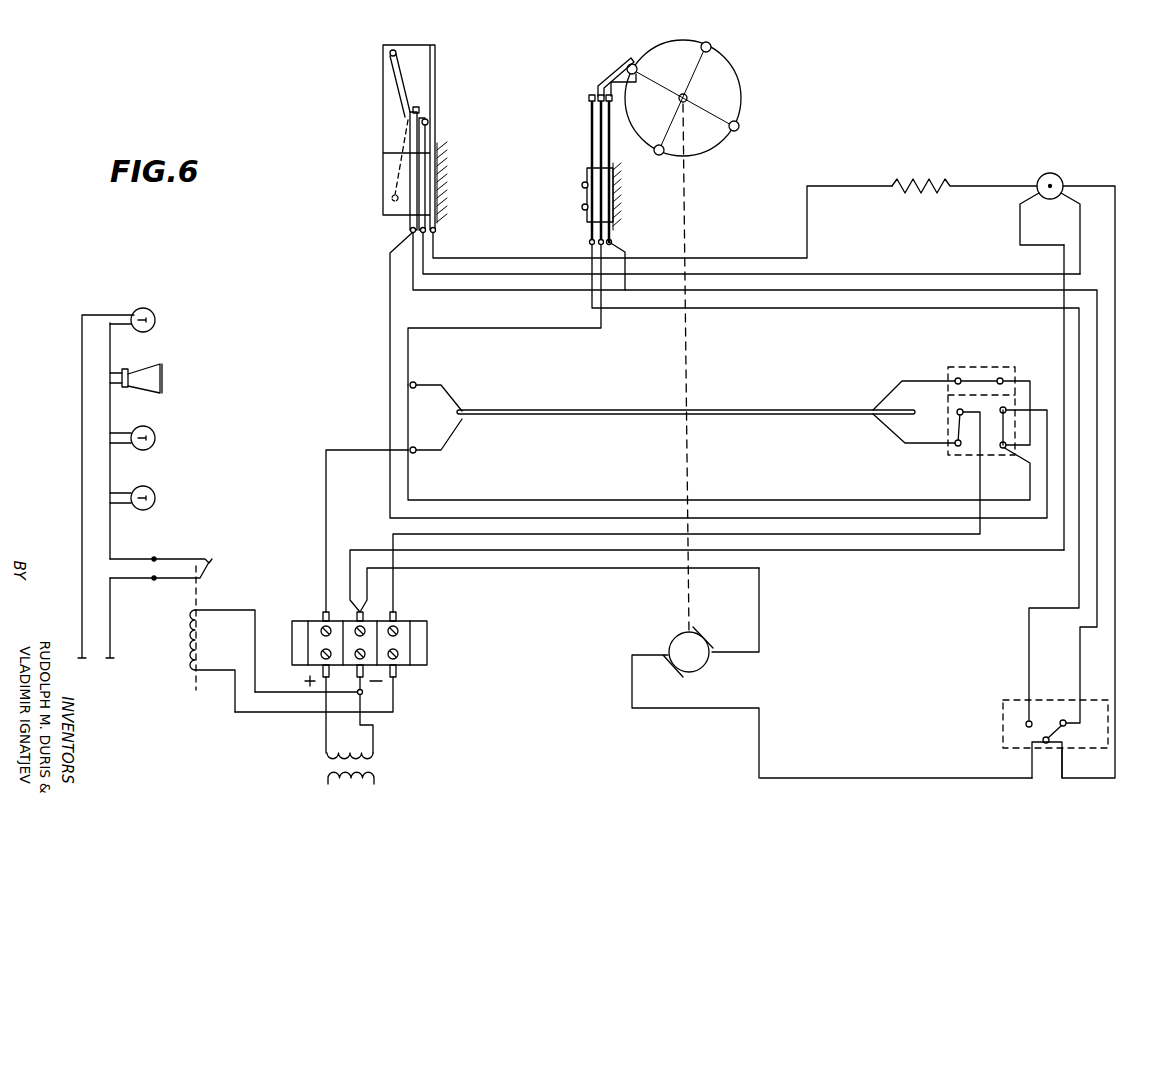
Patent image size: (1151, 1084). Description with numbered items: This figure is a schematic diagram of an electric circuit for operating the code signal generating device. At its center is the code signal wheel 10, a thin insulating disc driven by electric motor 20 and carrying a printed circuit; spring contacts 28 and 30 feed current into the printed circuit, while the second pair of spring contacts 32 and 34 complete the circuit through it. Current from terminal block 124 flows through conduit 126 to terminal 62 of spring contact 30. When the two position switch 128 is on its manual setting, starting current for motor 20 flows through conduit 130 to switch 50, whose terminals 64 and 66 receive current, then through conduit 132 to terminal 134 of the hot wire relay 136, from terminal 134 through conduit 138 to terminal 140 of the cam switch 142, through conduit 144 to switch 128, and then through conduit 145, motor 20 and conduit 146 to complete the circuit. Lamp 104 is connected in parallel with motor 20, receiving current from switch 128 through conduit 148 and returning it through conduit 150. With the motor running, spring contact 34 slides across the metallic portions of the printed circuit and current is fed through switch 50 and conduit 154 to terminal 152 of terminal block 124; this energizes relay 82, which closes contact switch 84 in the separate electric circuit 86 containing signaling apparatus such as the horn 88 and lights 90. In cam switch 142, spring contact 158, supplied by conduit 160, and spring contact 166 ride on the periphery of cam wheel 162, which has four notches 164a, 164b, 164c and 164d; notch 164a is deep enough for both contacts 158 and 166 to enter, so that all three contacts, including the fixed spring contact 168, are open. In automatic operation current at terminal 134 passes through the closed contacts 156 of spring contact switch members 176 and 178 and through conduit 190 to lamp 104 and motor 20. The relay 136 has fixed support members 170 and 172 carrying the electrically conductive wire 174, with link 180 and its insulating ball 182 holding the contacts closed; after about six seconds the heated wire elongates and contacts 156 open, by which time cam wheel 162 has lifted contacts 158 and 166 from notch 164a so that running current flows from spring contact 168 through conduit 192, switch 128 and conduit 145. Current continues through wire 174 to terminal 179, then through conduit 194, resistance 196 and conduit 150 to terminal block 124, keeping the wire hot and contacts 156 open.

The code signal wheel 10 is at (713, 408).
The electric motor 20 is at (704, 664).
The spring contact 28 is at (440, 383).
The spring contact 30 is at (438, 447).
The spring contact 32 is at (920, 371).
The spring contact 34 is at (880, 446).
The switch 50 is at (957, 378).
The terminal 62 is at (423, 453).
The terminal 64 is at (1003, 463).
The terminal 66 is at (1000, 378).
The relay 82 is at (190, 641).
The contact switch 84 is at (210, 566).
The electric circuit 86 is at (82, 493).
The horn 88 is at (164, 378).
The lights 90 is at (156, 320).
The lamp 104 is at (1062, 166).
The terminal block 124 is at (296, 620).
The conduit 126 is at (326, 488).
The two position switch 128 is at (1002, 710).
The conduit 130 is at (503, 500).
The conduit 132 is at (586, 517).
The terminal 134 is at (410, 232).
The hot wire relay 136 is at (369, 118).
The conduit 138 is at (526, 302).
The terminal 140 is at (614, 244).
The cam switch 142 is at (572, 188).
The conduit 144 is at (900, 289).
The conduit 145 is at (878, 777).
The conduit 146 is at (563, 572).
The conduit 148 is at (1094, 186).
The conduit 150 is at (1058, 328).
The terminal 152 is at (398, 612).
The conduit 154 is at (632, 533).
The contacts 156 is at (420, 110).
The spring contact 158 is at (598, 90).
The conduit 160 is at (456, 327).
The cam wheel 162 is at (741, 92).
The notch 164a is at (632, 63).
The notch 164b is at (659, 156).
The notch 164c is at (739, 127).
The notch 164d is at (711, 49).
The spring contact 166 is at (616, 100).
The spring contact 168 is at (590, 130).
The fixed support member 170 is at (391, 199).
The fixed support member 172 is at (390, 52).
The electrically conductive wire 174 is at (392, 76).
The spring contact switch member 176 is at (410, 142).
The spring contact switch member 178 is at (426, 140).
The terminal 179 is at (435, 233).
The link 180 is at (411, 110).
The ball of electric insulating material 182 is at (428, 122).
The conduit 190 is at (527, 272).
The conduit 192 is at (679, 309).
The conduit 194 is at (767, 258).
The resistance 196 is at (932, 186).